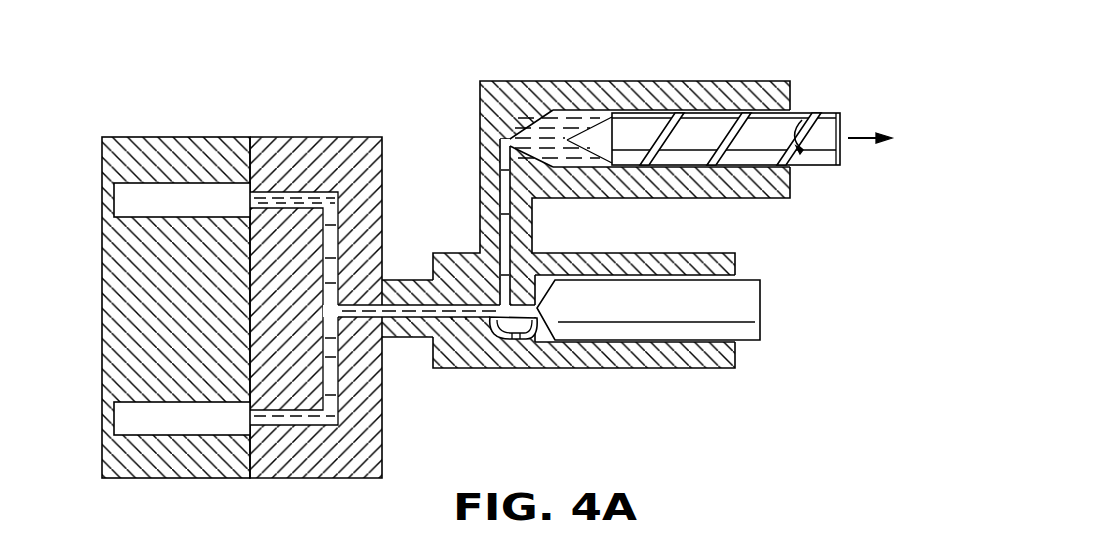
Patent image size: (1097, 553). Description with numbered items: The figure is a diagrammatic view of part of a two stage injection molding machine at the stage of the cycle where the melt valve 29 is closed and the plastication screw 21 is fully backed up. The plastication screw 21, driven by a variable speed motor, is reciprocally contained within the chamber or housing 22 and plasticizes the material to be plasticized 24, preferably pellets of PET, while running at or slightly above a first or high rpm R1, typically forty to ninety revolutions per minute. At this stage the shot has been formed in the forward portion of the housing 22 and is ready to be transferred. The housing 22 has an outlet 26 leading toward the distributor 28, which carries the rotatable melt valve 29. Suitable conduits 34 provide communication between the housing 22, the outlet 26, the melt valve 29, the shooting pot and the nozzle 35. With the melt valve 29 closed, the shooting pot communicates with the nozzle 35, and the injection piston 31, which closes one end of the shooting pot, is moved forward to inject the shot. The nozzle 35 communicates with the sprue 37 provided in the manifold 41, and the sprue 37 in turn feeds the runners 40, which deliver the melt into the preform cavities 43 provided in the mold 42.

The plastication screw 21 is at (660, 130).
The chamber or housing 22 is at (545, 133).
The material to be plasticized 24 is at (500, 184).
The outlet 26 is at (497, 137).
The distributor 28 is at (455, 262).
The melt valve 29 is at (494, 338).
The injection piston 31 is at (668, 332).
The conduits 34 is at (456, 320).
The nozzle 35 is at (408, 338).
The sprue 37 is at (382, 280).
The runners 40 is at (292, 195).
The manifold 41 is at (362, 138).
The mold 42 is at (172, 143).
The preform cavities 43 is at (122, 205).
The first or high rpm R1 is at (797, 127).